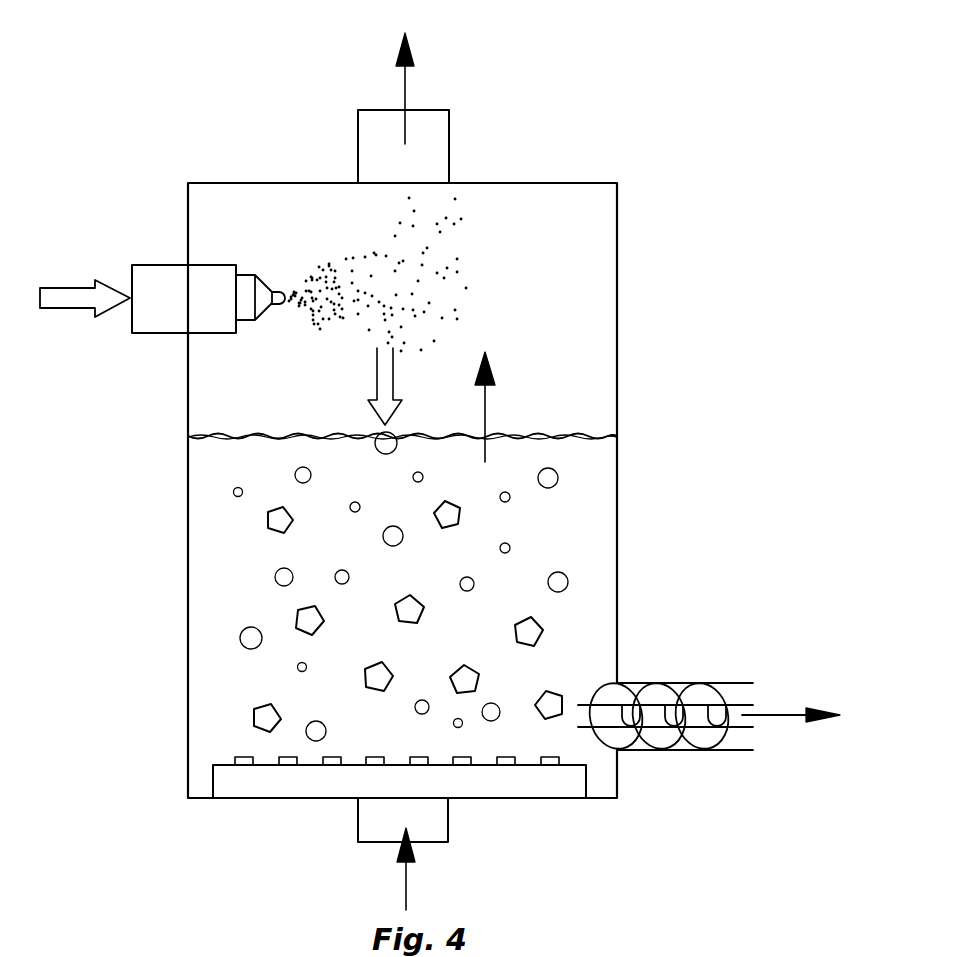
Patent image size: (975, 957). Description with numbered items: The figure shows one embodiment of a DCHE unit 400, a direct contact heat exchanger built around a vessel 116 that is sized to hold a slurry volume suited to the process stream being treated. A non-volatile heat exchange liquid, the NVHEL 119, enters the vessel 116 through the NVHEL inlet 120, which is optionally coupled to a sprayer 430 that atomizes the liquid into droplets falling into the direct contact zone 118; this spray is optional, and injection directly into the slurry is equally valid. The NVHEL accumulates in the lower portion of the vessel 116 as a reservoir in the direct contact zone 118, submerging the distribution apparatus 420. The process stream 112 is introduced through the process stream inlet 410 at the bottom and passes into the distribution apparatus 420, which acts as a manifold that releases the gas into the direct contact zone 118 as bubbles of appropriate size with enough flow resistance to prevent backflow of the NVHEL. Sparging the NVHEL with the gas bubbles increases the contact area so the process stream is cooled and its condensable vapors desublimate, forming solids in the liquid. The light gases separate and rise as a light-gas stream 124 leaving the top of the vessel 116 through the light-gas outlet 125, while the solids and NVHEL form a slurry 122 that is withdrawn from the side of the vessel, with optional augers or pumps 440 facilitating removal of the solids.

The DCHE unit 400 is at (436, 460).
The vessel 116 is at (617, 307).
The direct contact zone 118 is at (600, 535).
The NVHEL 119 is at (86, 288).
The NVHEL inlet 120 is at (167, 265).
The sprayer 430 is at (275, 290).
The light-gas stream 124 is at (405, 88).
The light-gas outlet 125 is at (449, 148).
The slurry 122 is at (770, 713).
The augers or pumps 440 is at (655, 738).
The distribution apparatus 420 is at (247, 782).
The process stream inlet 410 is at (448, 825).
The process stream 112 is at (406, 885).